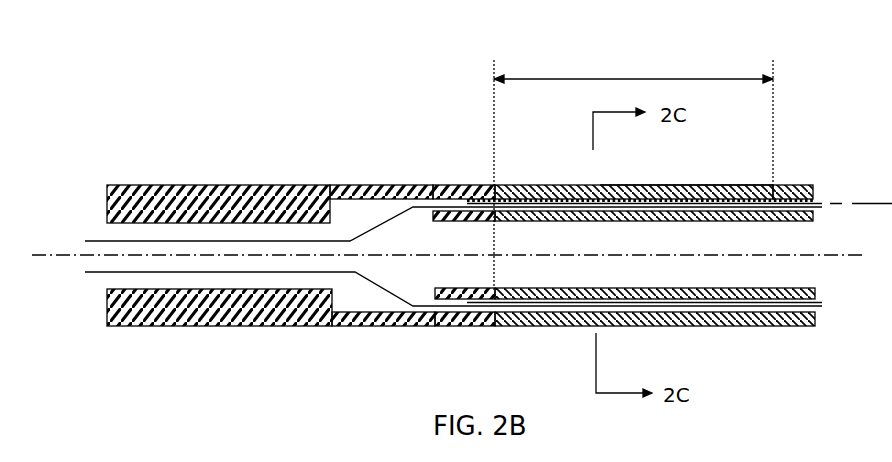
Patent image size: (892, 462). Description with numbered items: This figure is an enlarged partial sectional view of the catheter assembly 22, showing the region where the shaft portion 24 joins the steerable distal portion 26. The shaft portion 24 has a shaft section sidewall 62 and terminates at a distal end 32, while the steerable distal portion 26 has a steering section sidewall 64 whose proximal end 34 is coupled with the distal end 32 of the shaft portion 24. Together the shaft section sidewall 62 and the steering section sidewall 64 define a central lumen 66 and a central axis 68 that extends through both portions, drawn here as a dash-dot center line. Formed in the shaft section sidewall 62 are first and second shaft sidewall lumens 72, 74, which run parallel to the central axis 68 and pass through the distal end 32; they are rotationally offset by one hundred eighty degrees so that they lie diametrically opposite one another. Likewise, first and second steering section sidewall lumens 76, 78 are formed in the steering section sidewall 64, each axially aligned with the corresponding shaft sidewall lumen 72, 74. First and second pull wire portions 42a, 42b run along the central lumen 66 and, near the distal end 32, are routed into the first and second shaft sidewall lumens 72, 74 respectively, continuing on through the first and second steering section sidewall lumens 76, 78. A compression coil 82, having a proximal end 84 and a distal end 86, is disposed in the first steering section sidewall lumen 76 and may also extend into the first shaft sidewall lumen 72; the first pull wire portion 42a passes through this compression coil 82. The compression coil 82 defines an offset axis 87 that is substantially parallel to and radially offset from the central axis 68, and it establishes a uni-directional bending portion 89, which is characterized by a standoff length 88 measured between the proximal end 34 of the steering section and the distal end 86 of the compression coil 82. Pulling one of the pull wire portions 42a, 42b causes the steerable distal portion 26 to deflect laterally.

The catheter assembly 22 is at (128, 95).
The shaft portion 24 is at (135, 185).
The steerable distal portion 26 is at (786, 183).
The distal end of shaft portion 32 is at (468, 184).
The proximal end of steerable distal portion 34 is at (535, 184).
The first pull wire portion 42a is at (268, 241).
The second pull wire portion 42b is at (378, 290).
The shaft section sidewall 62 is at (210, 185).
The steering section sidewall 64 is at (718, 184).
The central lumen 66 is at (708, 270).
The central axis 68 is at (36, 255).
The first shaft sidewall lumen 72 is at (423, 184).
The second shaft sidewall lumen 74 is at (455, 327).
The first steering section sidewall lumen 76 is at (806, 198).
The second steering section sidewall lumen 78 is at (812, 327).
The compression coil 82 is at (662, 184).
The proximal end of compression coil 84 is at (433, 184).
The distal end of compression coil 86 is at (778, 182).
The offset axis 87 is at (872, 204).
The standoff length 88 is at (641, 79).
The uni-directional bending portion 89 is at (600, 159).